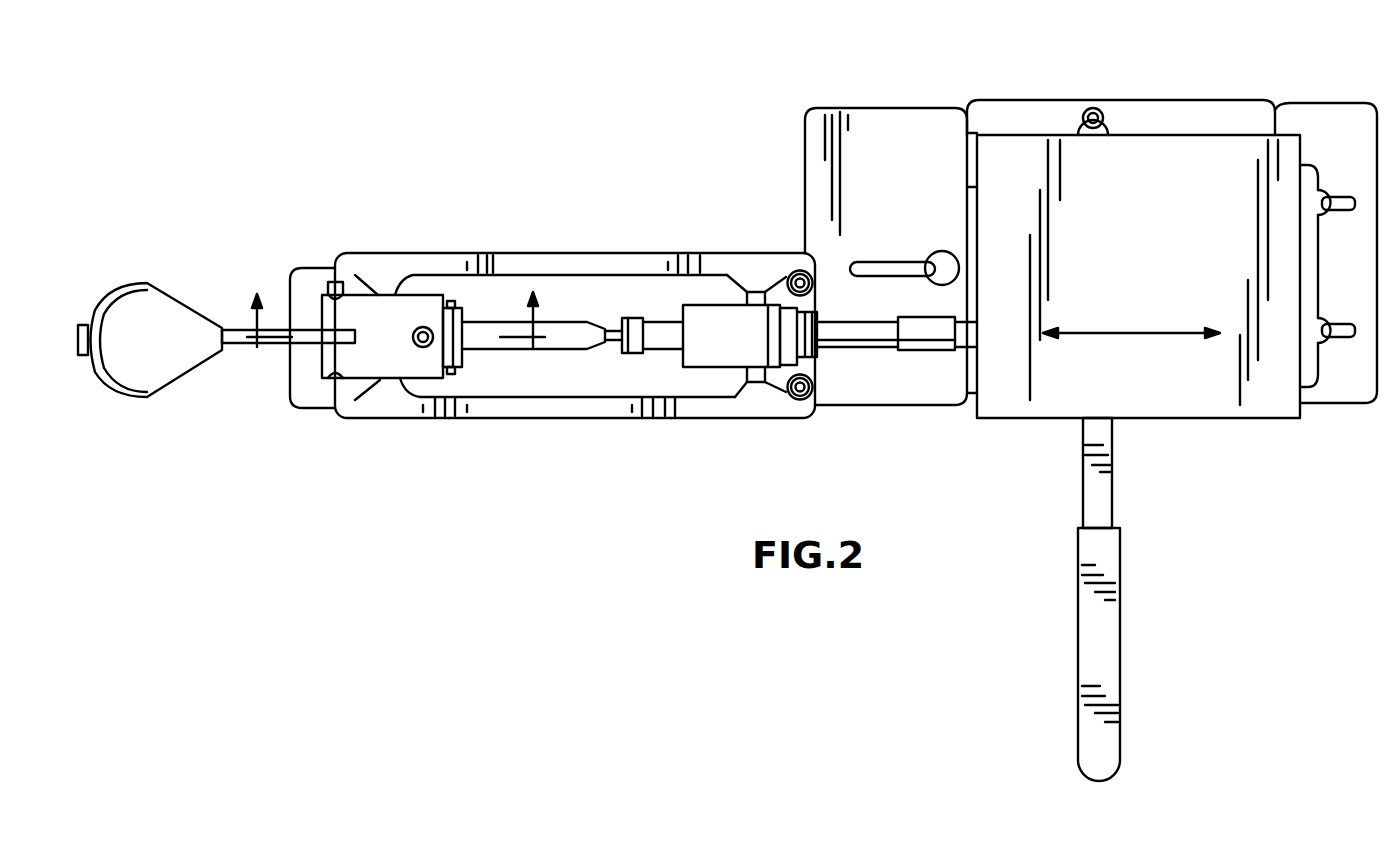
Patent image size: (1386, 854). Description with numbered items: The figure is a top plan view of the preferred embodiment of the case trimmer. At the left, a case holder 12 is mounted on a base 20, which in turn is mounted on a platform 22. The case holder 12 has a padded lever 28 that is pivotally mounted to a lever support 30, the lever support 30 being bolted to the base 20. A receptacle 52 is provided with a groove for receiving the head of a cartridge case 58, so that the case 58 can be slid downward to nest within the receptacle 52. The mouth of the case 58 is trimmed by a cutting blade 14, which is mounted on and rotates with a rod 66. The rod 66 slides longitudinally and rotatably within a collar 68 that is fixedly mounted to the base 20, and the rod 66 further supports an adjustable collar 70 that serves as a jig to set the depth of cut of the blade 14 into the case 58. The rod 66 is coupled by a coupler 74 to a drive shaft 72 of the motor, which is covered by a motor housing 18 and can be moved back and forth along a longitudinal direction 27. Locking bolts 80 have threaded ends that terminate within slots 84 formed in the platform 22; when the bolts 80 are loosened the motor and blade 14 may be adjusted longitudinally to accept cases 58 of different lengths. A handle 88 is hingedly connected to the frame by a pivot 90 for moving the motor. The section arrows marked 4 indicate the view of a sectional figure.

The section line 4- 4 is at (394, 335).
The case holder 12 is at (391, 248).
The cutting blade 14 is at (640, 318).
The motor housing 18 is at (1217, 418).
The base 20 is at (400, 420).
The platform 22 is at (1345, 405).
The longitudinal direction 27 is at (1125, 328).
The padded lever 28 is at (183, 297).
The lever support 30 is at (322, 368).
The receptacle 52 is at (467, 367).
The cartridge case 58 is at (575, 322).
The rod 66 is at (890, 352).
The collar 68 is at (710, 367).
The adjustable collar 70 is at (818, 365).
The drive shaft 72 is at (962, 400).
The coupler 74 is at (925, 317).
The locking bolts 80 is at (940, 251).
The slots 84 is at (880, 262).
The handle 88 is at (1078, 598).
The pivot 90 is at (1097, 100).